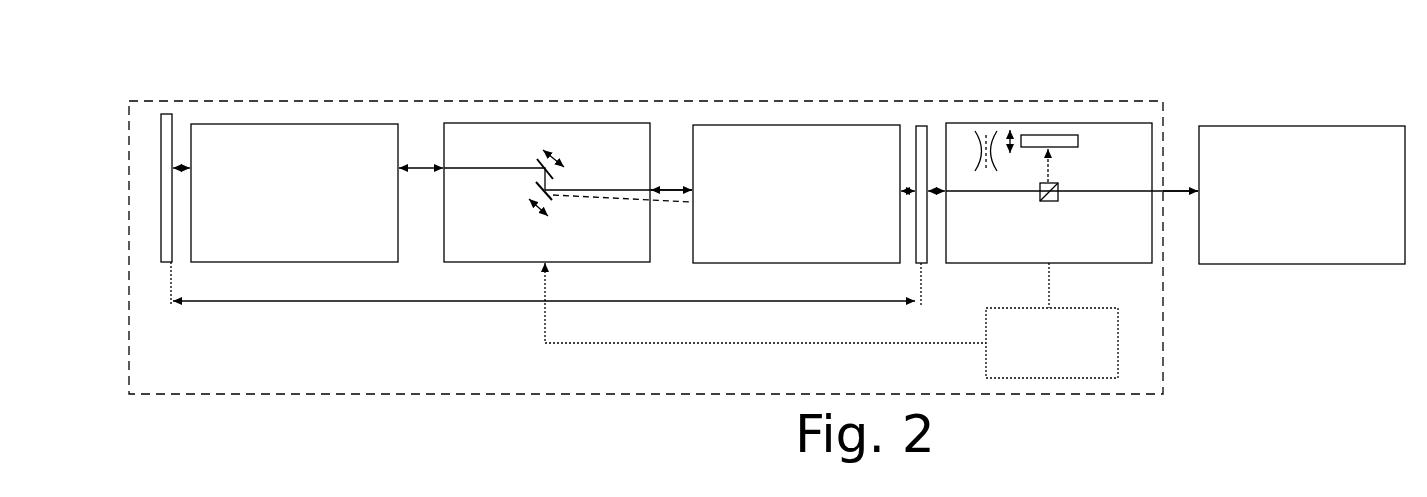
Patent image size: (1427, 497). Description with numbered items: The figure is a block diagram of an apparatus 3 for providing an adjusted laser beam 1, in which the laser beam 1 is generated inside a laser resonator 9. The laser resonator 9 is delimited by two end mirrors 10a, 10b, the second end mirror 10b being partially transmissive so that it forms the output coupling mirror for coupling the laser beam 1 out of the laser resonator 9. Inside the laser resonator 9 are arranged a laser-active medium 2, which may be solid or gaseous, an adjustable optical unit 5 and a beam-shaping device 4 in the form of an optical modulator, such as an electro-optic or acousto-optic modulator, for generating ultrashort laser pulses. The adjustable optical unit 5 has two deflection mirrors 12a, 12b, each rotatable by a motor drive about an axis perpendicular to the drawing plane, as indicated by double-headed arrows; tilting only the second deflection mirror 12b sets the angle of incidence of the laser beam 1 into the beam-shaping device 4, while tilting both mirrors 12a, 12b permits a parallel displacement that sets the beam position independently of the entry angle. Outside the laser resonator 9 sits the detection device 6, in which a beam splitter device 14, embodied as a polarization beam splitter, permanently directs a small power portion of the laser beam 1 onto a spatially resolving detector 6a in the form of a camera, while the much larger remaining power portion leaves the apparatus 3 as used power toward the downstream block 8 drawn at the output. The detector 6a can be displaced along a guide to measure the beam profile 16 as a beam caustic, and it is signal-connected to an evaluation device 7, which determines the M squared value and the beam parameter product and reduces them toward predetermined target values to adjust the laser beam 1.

The laser beam 1 is at (1175, 190).
The laser-active medium 2 is at (323, 124).
The apparatus 3 is at (200, 101).
The beam-shaping device 4 is at (775, 125).
The adjustable optical unit 5 is at (587, 123).
The detection device 6 is at (1050, 123).
The detector 6a is at (1078, 142).
The evaluation device 7 is at (1070, 379).
The processing unit 8 is at (1293, 126).
The laser resonator 9 is at (457, 302).
The first end mirror 10a is at (163, 264).
The second end mirror 10b is at (922, 265).
The first deflection mirror 12a is at (545, 175).
The second deflection mirror 12b is at (549, 194).
The beam splitter device 14 is at (1038, 204).
The beam profile 16 is at (968, 147).